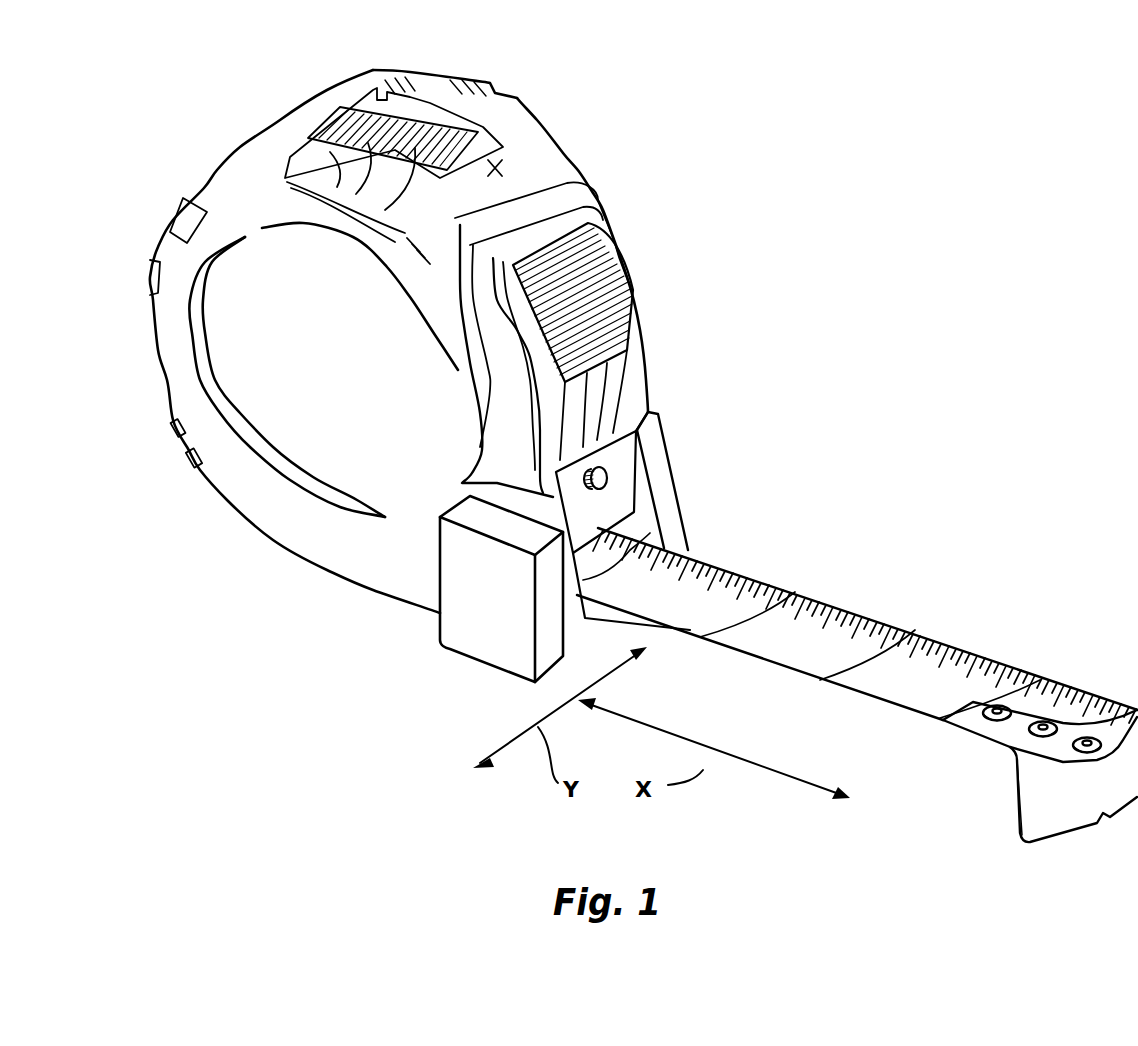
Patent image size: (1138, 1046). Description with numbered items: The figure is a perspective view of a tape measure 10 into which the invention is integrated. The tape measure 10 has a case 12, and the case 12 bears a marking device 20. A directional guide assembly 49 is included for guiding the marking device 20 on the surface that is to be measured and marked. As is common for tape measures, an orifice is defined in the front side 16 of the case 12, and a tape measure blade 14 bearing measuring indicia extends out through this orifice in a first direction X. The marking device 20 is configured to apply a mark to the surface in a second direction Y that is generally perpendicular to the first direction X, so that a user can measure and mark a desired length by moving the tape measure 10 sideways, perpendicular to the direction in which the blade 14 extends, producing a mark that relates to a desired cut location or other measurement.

The tape measure 10 is at (718, 266).
The case 12 is at (536, 130).
The tape measure blade 14 is at (838, 632).
The front side 16 is at (660, 482).
The marking device 20 is at (480, 684).
The directional guide assembly 49 is at (514, 695).